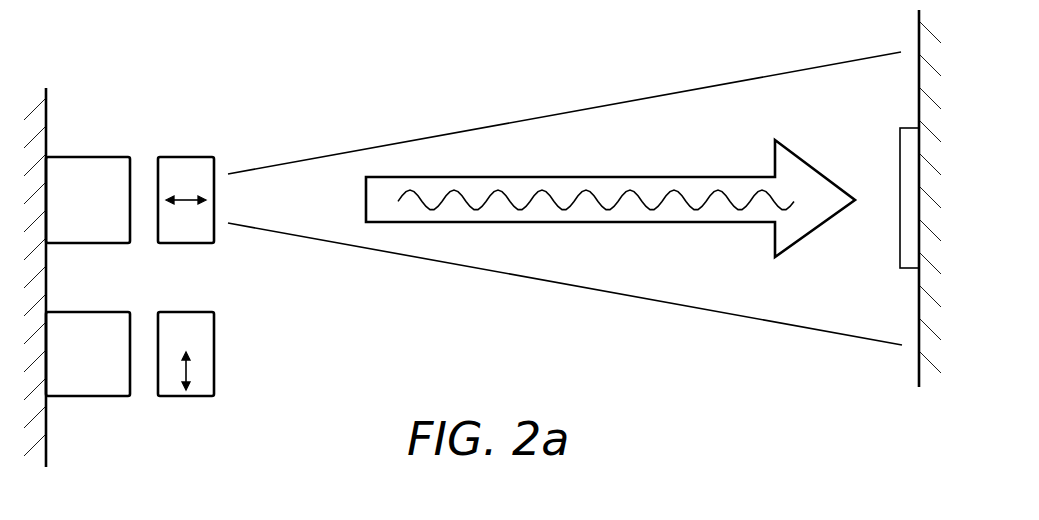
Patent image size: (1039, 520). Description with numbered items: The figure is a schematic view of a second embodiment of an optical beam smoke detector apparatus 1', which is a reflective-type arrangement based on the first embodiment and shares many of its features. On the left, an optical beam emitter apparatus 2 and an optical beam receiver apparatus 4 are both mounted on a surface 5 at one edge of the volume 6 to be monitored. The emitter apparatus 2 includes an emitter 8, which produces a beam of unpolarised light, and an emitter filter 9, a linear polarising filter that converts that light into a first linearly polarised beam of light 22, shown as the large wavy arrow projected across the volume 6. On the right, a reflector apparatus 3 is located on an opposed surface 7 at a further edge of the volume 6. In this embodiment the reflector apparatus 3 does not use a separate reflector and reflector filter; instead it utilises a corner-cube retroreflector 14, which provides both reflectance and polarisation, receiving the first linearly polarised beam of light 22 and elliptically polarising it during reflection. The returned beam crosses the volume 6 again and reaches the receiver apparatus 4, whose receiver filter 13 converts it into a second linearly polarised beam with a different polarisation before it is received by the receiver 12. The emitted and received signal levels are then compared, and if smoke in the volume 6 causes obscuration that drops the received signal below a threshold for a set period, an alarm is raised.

The optical beam smoke detector apparatus 1' is at (610, 155).
The optical beam emitter apparatus 2 is at (130, 168).
The reflector apparatus 3 is at (879, 178).
The optical beam receiver apparatus 4 is at (130, 388).
The surface 5 is at (46, 452).
The volume to be monitored 6 is at (565, 198).
The opposed surface 7 is at (919, 372).
The emitter 8 is at (88, 200).
The emitter filter 9 is at (186, 200).
The receiver 12 is at (88, 354).
The receiver filter 13 is at (186, 354).
The corner-cube retroreflector 14 is at (900, 252).
The first linearly polarised beam of light 22 is at (677, 223).